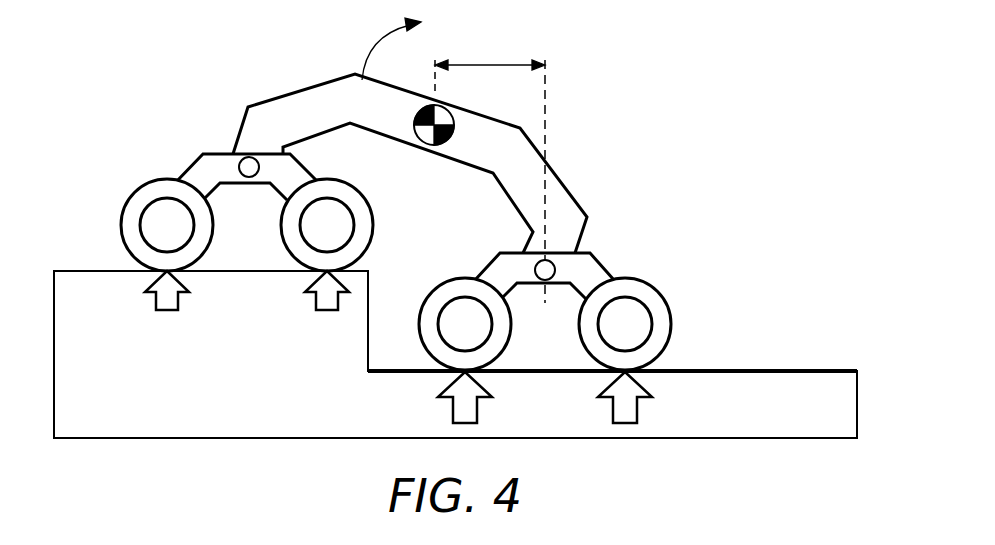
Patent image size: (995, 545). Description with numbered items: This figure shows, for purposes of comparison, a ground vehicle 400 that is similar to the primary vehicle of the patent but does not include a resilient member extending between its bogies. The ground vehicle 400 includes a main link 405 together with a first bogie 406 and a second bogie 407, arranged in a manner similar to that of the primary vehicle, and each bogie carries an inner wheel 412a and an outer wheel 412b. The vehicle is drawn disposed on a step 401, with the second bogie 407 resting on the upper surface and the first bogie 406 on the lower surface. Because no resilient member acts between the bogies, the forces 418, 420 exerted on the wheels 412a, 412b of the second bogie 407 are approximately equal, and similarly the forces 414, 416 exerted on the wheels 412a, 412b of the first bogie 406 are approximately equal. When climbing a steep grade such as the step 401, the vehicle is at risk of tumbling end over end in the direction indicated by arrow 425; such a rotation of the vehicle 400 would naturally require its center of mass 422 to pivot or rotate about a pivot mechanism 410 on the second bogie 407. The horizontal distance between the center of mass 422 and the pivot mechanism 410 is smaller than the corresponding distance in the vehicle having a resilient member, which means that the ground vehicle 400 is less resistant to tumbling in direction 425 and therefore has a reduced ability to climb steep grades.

The ground vehicle 400 is at (398, 192).
The step 401 is at (216, 373).
The main link 405 is at (351, 113).
The first bogie 406 is at (208, 170).
The second bogie 407 is at (597, 262).
The pivot mechanism 410 is at (547, 281).
The inner wheel 412a is at (373, 210).
The outer wheel 412b is at (128, 198).
The force 414 is at (155, 308).
The force 416 is at (318, 308).
The force 418 is at (453, 417).
The force 420 is at (613, 416).
The center of mass 422 is at (421, 111).
The arrow 425 is at (384, 47).